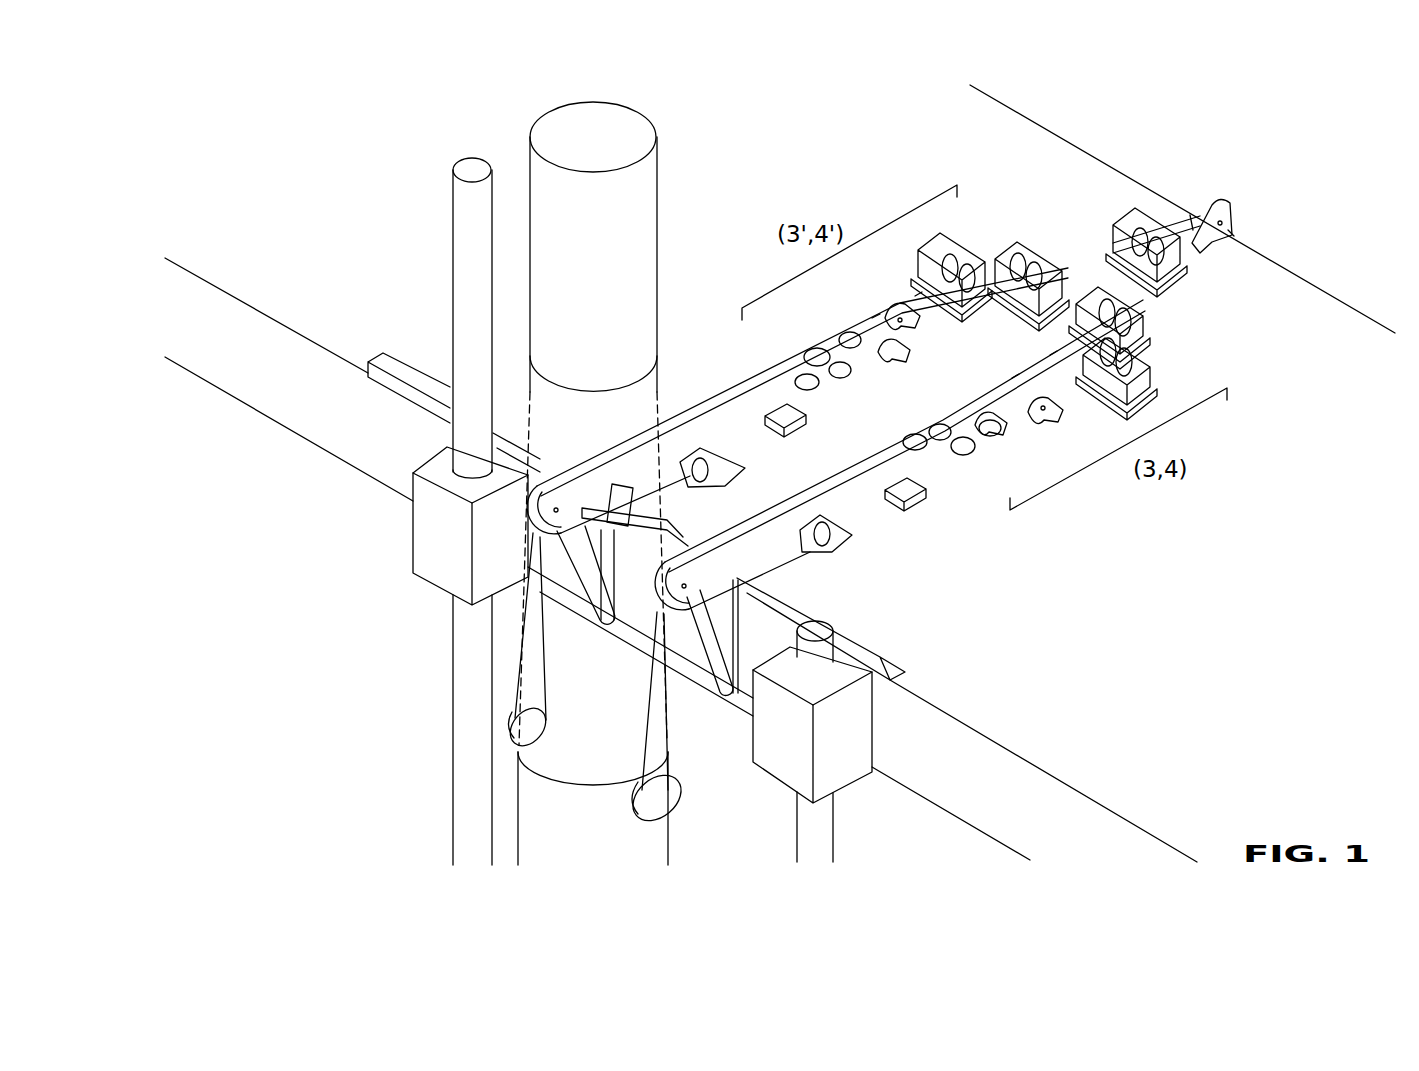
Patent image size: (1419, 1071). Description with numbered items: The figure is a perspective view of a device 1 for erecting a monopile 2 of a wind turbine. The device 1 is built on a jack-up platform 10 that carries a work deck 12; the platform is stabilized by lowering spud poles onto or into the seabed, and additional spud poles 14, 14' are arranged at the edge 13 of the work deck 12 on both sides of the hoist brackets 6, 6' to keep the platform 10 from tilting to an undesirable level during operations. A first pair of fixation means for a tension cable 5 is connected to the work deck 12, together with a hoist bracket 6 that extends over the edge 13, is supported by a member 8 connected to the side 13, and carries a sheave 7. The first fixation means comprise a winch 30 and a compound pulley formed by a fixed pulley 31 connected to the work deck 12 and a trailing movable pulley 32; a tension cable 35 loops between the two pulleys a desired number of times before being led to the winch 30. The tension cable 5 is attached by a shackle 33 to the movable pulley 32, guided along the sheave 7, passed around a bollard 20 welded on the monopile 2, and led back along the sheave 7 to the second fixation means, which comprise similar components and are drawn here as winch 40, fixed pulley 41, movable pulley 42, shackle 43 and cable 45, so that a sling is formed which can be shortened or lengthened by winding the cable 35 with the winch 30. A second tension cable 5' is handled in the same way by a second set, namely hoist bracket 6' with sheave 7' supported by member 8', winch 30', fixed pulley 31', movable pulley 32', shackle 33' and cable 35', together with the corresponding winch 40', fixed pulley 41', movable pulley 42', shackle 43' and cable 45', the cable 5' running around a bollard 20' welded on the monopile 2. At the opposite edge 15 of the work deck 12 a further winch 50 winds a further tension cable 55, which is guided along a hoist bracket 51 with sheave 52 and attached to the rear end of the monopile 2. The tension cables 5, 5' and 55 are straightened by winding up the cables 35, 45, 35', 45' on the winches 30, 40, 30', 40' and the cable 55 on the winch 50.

The device 1 is at (284, 164).
The monopile 2 is at (664, 165).
The tension cable 5 is at (872, 508).
The second tension cable 5' is at (865, 447).
The hoist bracket 6 is at (792, 604).
The hoist bracket 6' is at (661, 521).
The sheave 7 is at (716, 578).
The sheave 7' is at (608, 482).
The member 8 is at (704, 657).
The member 8' is at (582, 579).
The jack-up platform 10 is at (1093, 153).
The work deck 12 is at (829, 151).
The edge 13 is at (307, 392).
The additional spud pole 14 is at (800, 741).
The additional spud pole 14' is at (455, 511).
The edge 15 is at (1302, 272).
The bollard 20 is at (675, 734).
The bollard 20' is at (483, 647).
The winch 30 is at (1149, 379).
The winch 30' is at (939, 248).
The fixed pulley 31 is at (1064, 429).
The roller arm 31' is at (930, 323).
The movable pulley 32 is at (1006, 451).
The movable pulley 32' is at (833, 316).
The shackle 33 is at (975, 467).
The shackle 33' is at (797, 337).
The tension cable 35 is at (1047, 346).
The tension cable 35' is at (868, 296).
The winch 40 is at (1140, 328).
The winch 40' is at (1020, 258).
The roller arm 41 is at (983, 390).
The roller arm 41' is at (918, 365).
The clamp 42 is at (922, 416).
The clamp 42' is at (861, 384).
The clamp 43 is at (893, 433).
The clamp 43' is at (823, 403).
The cable 45 is at (1009, 352).
The cable 45' is at (901, 273).
The winch 50 is at (1193, 267).
The hoist bracket 51 is at (1232, 222).
The sheave 52 is at (1228, 205).
The further tension cable 55 is at (1182, 215).